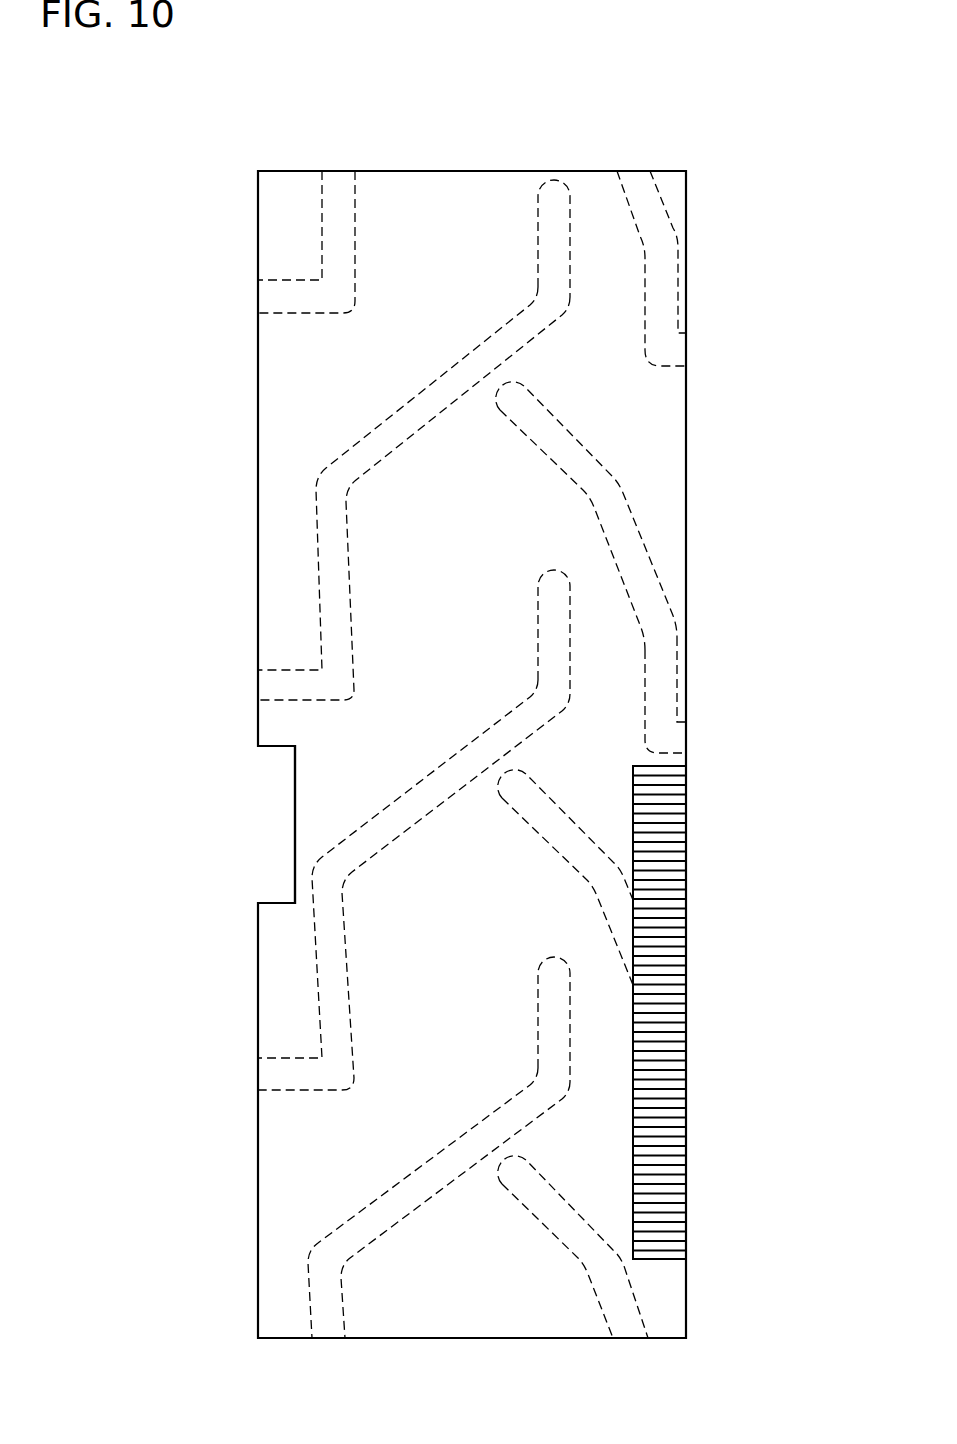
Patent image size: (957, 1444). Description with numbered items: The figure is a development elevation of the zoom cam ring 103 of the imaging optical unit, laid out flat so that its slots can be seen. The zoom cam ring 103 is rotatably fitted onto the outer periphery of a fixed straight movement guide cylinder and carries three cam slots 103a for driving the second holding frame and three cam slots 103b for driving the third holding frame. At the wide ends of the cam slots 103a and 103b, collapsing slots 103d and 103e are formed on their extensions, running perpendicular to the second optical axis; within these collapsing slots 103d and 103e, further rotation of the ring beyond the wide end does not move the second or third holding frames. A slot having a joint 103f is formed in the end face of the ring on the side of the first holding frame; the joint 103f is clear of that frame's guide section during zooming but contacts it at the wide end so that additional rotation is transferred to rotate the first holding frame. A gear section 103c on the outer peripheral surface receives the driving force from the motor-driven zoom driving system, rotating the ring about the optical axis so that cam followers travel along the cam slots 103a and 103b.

The zoom cam ring 103 is at (230, 160).
The cam slots 103a is at (387, 428).
The cam slots 103b is at (623, 545).
The gear section 103c is at (678, 1057).
The collapsing slots 103d is at (548, 216).
The collapsing slots 103e is at (660, 276).
The joint 103f is at (278, 748).